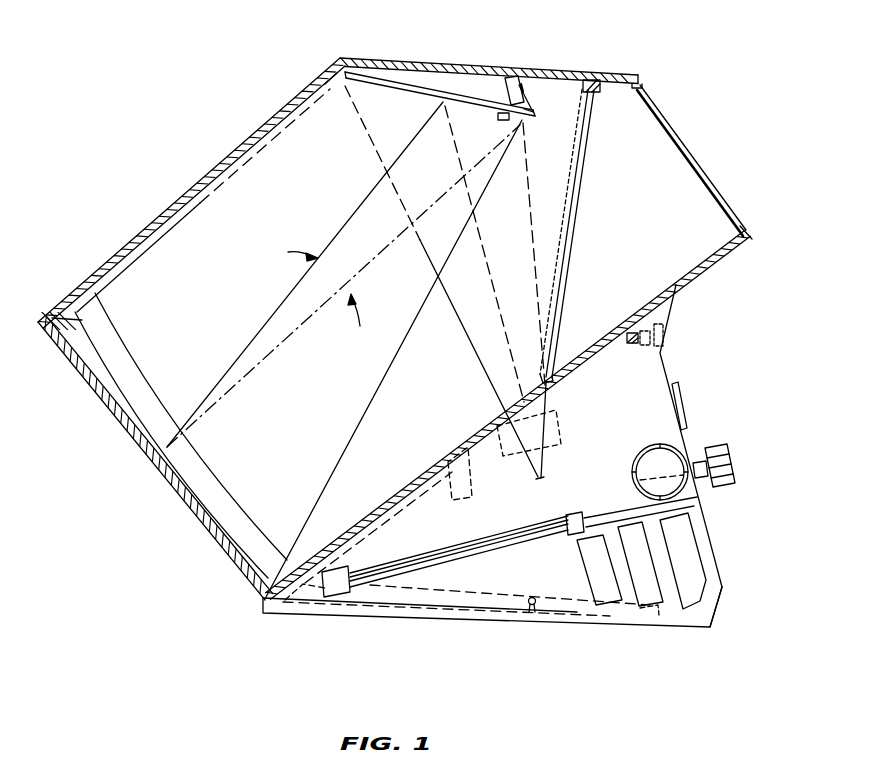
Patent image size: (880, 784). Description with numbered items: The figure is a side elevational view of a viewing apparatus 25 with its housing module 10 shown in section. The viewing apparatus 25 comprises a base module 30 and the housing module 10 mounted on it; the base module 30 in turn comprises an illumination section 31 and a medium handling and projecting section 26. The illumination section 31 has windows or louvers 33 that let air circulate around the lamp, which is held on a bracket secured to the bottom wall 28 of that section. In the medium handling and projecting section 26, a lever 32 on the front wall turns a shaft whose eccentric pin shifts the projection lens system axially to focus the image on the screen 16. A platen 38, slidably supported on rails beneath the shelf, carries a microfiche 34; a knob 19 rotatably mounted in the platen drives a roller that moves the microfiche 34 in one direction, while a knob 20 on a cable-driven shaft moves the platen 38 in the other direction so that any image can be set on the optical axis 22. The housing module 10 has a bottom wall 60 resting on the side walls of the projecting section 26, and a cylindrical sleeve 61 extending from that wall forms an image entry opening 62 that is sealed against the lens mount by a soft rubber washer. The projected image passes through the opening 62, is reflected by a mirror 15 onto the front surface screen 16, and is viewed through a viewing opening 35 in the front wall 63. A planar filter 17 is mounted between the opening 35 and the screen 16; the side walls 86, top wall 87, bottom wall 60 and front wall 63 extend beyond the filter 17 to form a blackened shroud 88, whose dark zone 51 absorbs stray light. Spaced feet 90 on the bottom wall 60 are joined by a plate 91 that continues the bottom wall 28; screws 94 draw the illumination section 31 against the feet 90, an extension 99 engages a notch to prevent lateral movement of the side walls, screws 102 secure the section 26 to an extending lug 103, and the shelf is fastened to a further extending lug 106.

The housing module 10 is at (396, 422).
The mirror 15 is at (403, 88).
The front surface screen 16 is at (152, 416).
The filter 17 is at (572, 163).
The knob 19 is at (736, 458).
The knob 20 is at (634, 470).
The optical axis 22 is at (299, 281).
The viewing apparatus 25 is at (228, 152).
The medium handling and projecting section 26 is at (668, 428).
The bottom wall 28 is at (662, 605).
The base module 30 is at (710, 511).
The illumination section 31 is at (716, 560).
The lever 32 is at (681, 394).
The windows or louvers 33 is at (592, 590).
The microfiche 34 is at (483, 553).
The viewing opening 35 is at (645, 83).
The platen 38 is at (398, 580).
The dark zone 51 is at (660, 294).
The bottom wall 60 is at (690, 281).
The cylindrical sleeve 61 is at (556, 414).
The image entry opening 62 is at (505, 410).
The front wall 63 is at (712, 179).
The side walls 86 is at (613, 183).
The top wall 87 is at (572, 70).
The shroud 88 is at (655, 152).
The feet 90 is at (455, 612).
The plate 91 is at (360, 605).
The screws 94 is at (536, 614).
The extension 99 is at (298, 603).
The screws 102 is at (665, 337).
The extending lug 103 is at (628, 348).
The extending lug 106 is at (472, 496).